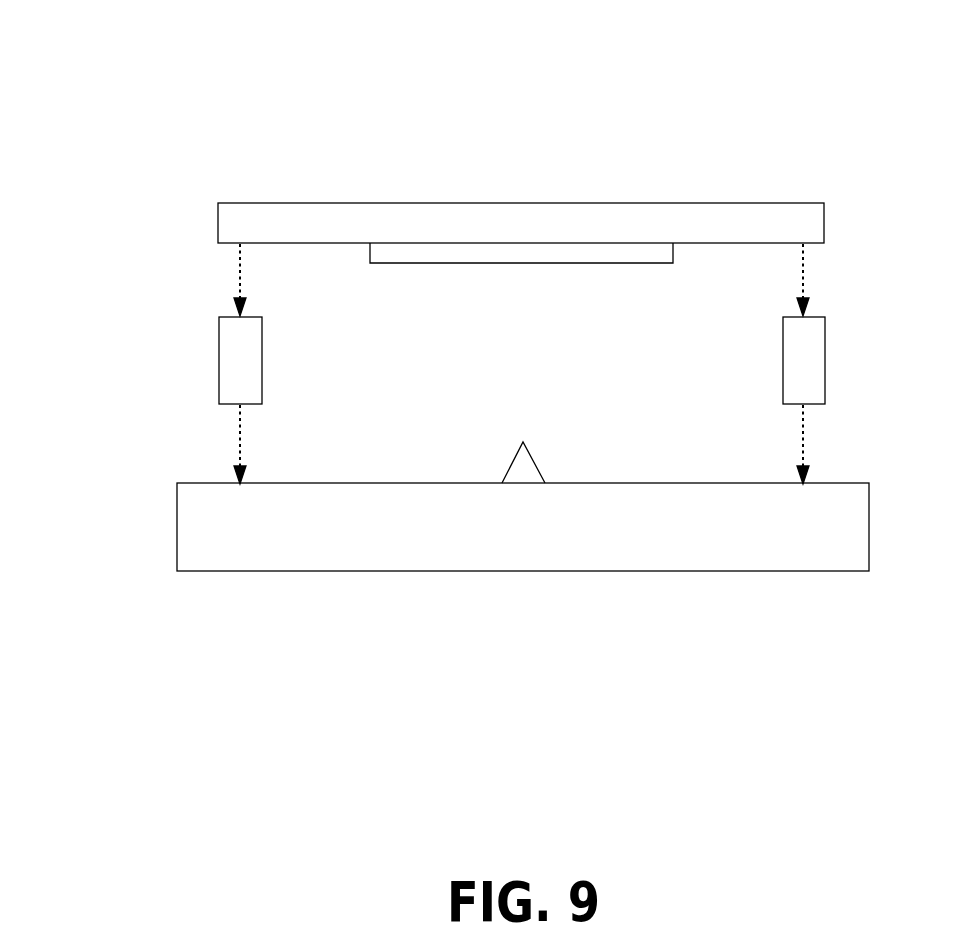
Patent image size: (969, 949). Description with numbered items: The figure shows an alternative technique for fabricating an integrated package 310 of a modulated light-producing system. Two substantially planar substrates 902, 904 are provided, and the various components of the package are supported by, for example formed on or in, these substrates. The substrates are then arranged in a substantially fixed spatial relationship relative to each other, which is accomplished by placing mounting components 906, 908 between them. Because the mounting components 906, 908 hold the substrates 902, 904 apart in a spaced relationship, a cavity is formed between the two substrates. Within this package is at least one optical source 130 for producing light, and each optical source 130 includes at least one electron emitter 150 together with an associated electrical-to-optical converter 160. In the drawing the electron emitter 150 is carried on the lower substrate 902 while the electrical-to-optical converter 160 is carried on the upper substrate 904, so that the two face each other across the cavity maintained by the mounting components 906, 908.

The integrated package 310 is at (133, 143).
The substrate 904 is at (345, 203).
The electrical-to-optical converter 160 is at (543, 268).
The mounting component 906 is at (262, 372).
The mounting component 908 is at (825, 372).
The substrate 902 is at (176, 528).
The electron emitter 150 is at (515, 458).
The optical source 130 is at (615, 543).